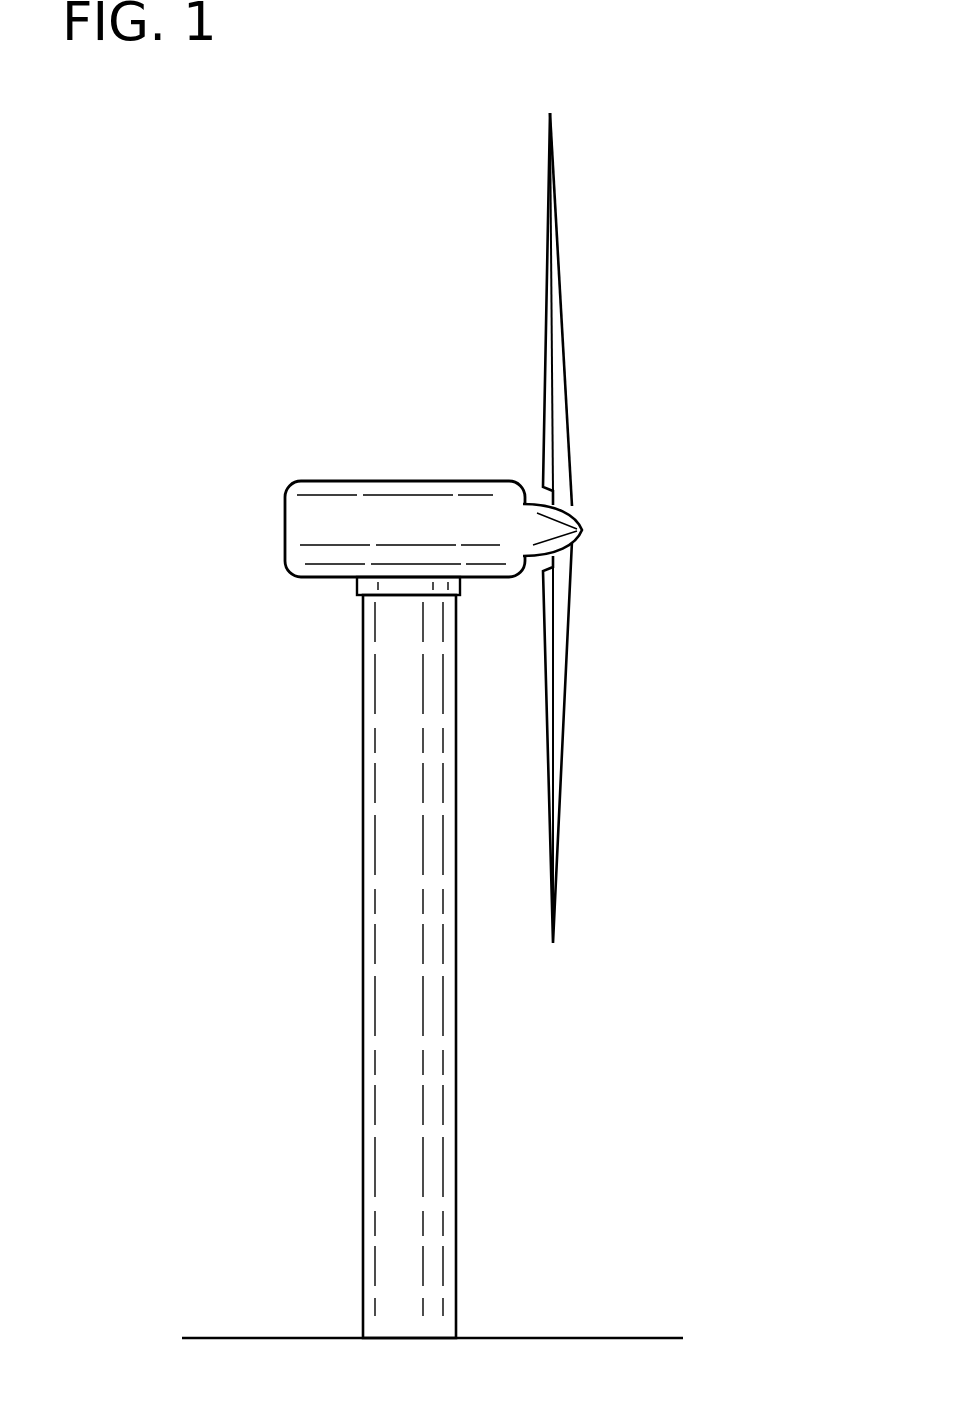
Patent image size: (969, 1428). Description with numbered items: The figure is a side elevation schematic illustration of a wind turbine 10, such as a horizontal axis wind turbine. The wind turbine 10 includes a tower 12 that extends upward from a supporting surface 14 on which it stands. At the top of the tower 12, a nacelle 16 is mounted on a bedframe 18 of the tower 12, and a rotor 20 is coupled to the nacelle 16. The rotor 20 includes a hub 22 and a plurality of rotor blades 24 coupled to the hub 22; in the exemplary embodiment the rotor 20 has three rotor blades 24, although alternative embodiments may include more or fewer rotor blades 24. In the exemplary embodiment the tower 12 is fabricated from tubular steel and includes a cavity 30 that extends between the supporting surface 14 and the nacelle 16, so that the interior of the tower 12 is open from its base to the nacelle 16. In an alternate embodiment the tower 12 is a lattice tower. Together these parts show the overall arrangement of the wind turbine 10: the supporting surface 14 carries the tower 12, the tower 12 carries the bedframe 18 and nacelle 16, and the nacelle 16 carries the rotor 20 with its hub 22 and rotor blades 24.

The wind turbine 10 is at (297, 453).
The tower 12 is at (396, 1022).
The supporting surface 14 is at (272, 1336).
The nacelle 16 is at (431, 494).
The bedframe 18 is at (357, 585).
The rotor 20 is at (592, 512).
The hub 22 is at (582, 530).
The rotor blades 24 is at (563, 404).
The cavity 30 is at (396, 855).